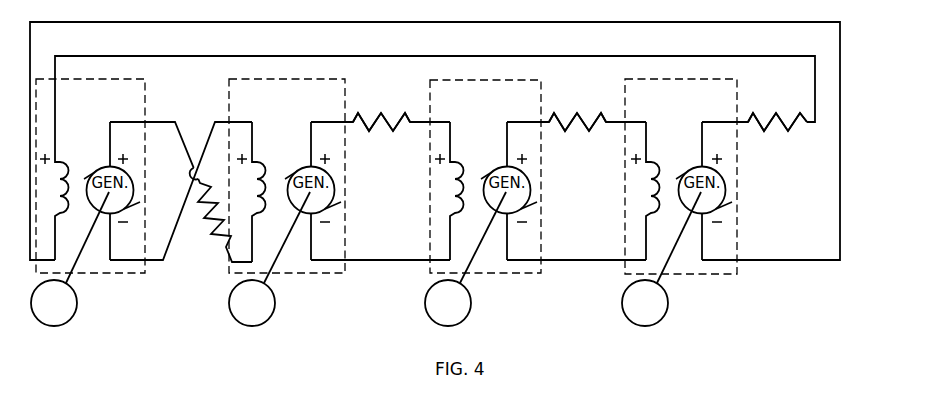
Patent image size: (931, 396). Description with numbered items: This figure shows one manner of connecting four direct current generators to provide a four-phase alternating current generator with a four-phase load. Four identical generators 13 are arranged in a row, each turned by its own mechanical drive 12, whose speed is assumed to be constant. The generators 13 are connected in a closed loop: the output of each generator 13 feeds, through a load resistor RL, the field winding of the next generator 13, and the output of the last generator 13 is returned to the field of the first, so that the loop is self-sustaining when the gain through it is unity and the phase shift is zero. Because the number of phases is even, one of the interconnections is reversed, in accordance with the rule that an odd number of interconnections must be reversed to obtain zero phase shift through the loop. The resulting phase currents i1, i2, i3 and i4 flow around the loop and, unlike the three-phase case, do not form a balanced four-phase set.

The generator 13 is at (117, 77).
The mechanical drive 12 is at (76, 315).
The load resistor RL is at (377, 126).
The phase current i1 is at (134, 113).
The phase current i2 is at (336, 113).
The phase current i3 is at (532, 113).
The phase current i4 is at (728, 113).